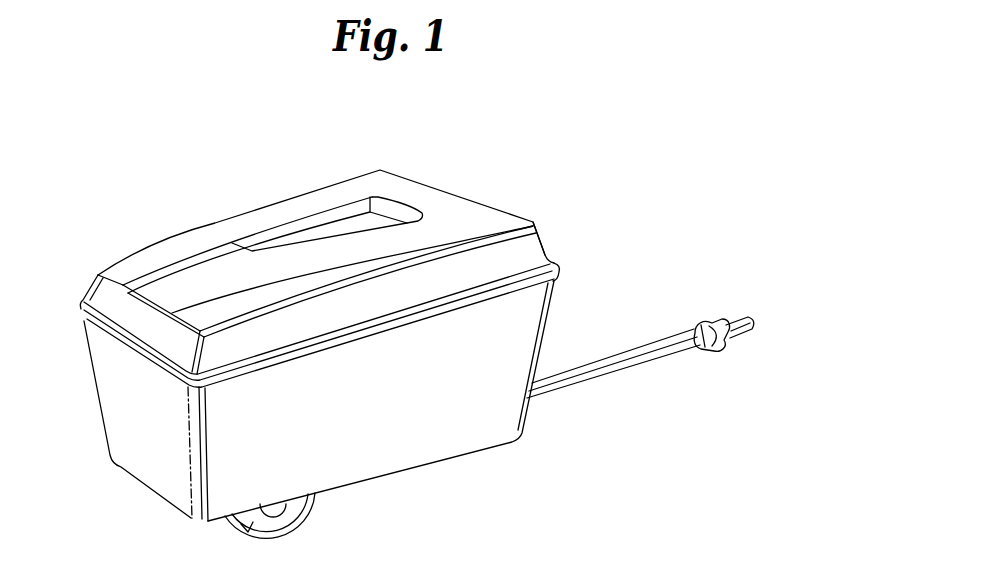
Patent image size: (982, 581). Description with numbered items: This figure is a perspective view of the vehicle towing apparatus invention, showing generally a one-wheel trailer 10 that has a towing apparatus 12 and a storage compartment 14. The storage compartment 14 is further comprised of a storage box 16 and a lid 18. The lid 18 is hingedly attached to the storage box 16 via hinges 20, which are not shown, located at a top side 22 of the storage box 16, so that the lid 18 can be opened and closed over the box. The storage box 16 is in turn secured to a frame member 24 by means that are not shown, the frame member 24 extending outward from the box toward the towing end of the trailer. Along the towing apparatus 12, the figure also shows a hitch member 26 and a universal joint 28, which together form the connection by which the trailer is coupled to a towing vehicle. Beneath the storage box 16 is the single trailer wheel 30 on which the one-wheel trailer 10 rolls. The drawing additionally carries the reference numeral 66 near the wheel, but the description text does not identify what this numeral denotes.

The trailer assembly 10 is at (488, 177).
The hitch assembly 12 is at (693, 242).
The lid 14 is at (97, 272).
The container body 16 is at (521, 340).
The handle opening 18 is at (400, 186).
The lid end wall 20 is at (551, 245).
The rim 22 is at (572, 281).
The tongue 24 is at (573, 393).
The hitch pin 26 is at (742, 344).
The coupler 28 is at (717, 312).
The wheel 30 is at (246, 526).
The tire 66 is at (298, 520).